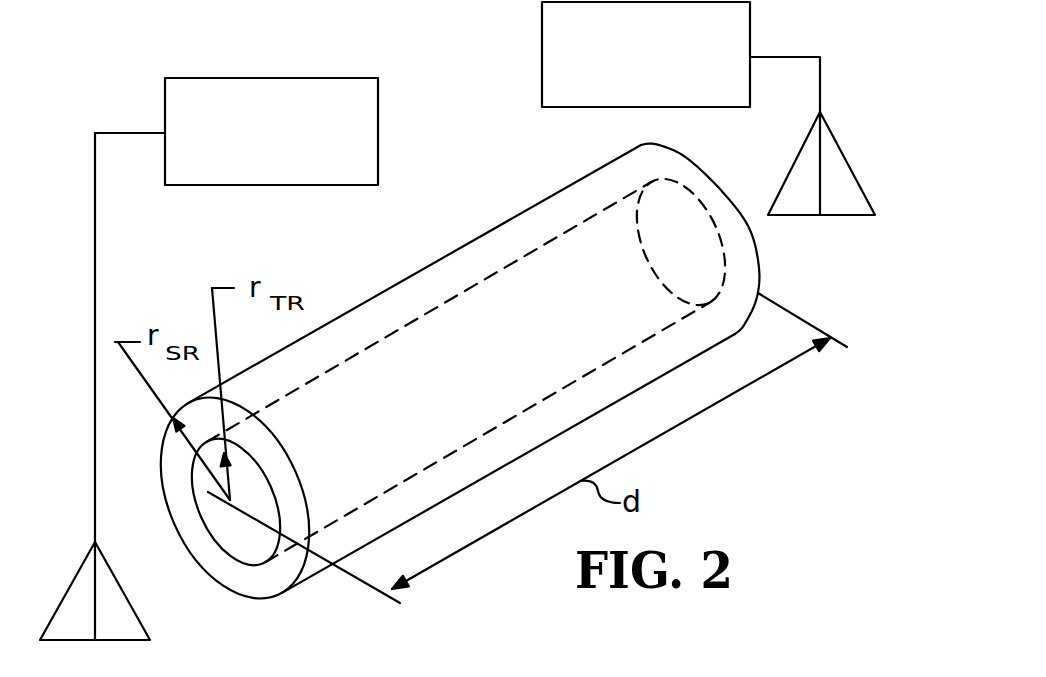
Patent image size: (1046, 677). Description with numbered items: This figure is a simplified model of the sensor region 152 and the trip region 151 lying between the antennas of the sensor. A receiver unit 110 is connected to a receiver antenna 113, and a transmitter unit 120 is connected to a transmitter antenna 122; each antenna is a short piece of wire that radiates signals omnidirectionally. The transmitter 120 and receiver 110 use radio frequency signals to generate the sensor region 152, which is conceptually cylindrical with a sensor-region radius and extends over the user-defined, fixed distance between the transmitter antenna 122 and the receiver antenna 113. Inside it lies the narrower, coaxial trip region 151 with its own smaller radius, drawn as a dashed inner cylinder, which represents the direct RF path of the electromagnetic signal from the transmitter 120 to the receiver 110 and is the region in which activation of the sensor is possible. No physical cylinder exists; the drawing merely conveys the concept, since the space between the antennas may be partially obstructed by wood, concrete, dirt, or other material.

The receiver 110 is at (292, 175).
The receiver antenna 113 is at (147, 625).
The transmitter 120 is at (672, 97).
The transmitter antenna 122 is at (833, 217).
The trip region 151 is at (245, 565).
The sensor region 152 is at (277, 598).